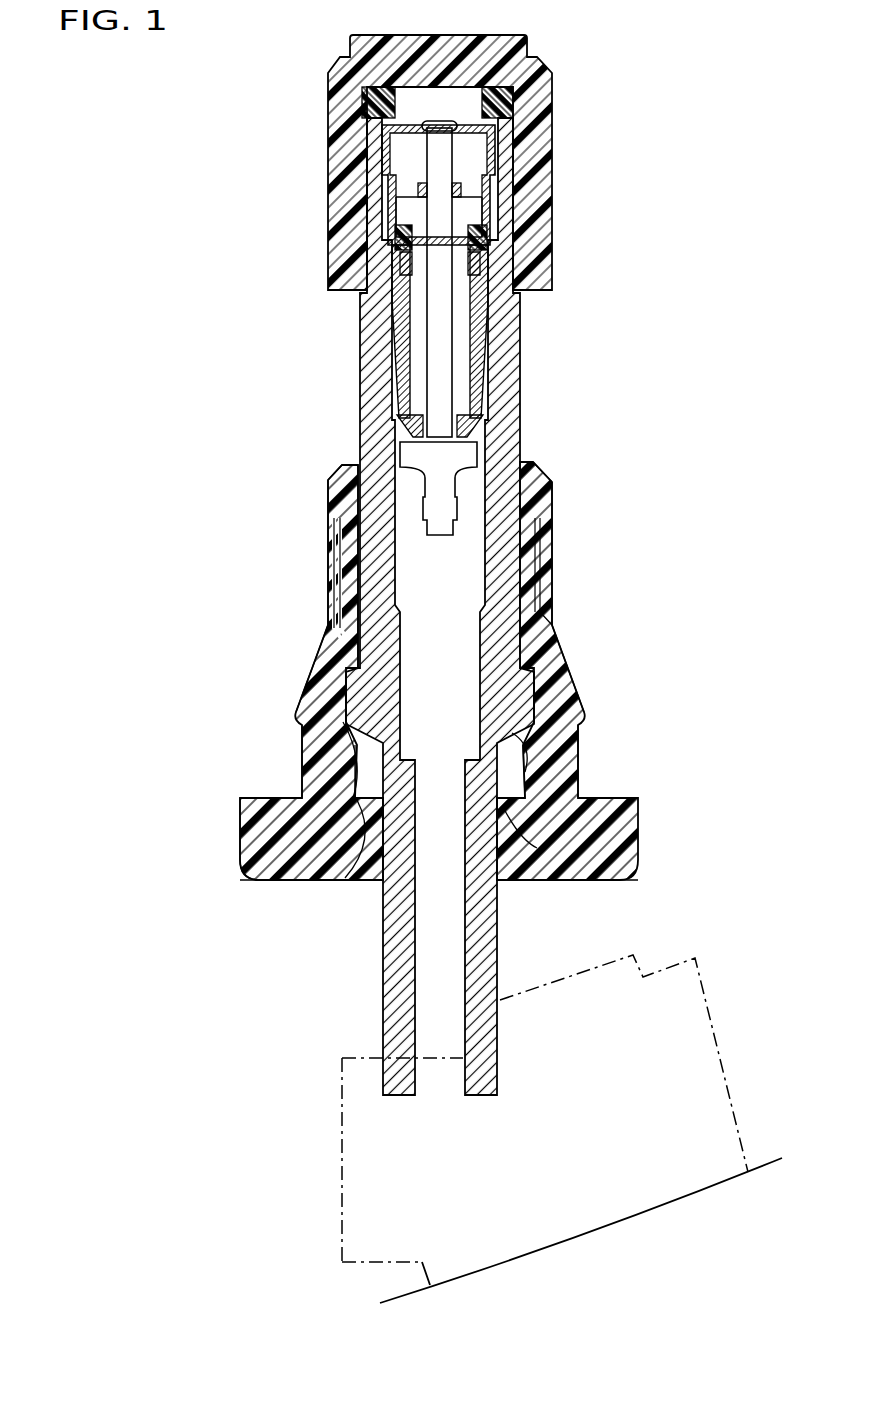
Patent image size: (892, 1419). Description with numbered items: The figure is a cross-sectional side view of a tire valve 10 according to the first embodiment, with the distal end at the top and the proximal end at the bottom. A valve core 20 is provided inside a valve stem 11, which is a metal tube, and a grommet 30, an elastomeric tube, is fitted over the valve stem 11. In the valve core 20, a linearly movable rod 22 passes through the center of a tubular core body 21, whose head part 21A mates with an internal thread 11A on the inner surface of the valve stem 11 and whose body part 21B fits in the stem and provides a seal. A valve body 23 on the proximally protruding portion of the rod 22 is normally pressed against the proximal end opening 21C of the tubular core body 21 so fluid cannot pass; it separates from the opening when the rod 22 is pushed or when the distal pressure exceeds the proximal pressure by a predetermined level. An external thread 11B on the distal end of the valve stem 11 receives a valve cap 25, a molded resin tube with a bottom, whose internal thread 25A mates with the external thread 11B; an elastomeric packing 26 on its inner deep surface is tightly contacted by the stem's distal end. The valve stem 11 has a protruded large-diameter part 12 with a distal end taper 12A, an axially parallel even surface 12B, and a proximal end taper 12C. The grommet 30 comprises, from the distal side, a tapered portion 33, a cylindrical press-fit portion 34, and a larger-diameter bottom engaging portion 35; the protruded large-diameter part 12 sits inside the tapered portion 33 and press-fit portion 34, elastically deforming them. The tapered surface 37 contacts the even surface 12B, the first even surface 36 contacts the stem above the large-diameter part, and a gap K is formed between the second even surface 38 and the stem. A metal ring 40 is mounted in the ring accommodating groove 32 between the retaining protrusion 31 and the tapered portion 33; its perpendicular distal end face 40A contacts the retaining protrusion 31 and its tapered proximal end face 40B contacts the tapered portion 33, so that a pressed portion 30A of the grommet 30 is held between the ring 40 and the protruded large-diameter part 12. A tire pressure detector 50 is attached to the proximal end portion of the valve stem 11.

The tire valve 10 is at (610, 63).
The valve stem 11 is at (510, 375).
The internal thread 11A is at (513, 147).
The external thread 11B is at (368, 193).
The protruded large-diameter part 12 is at (547, 698).
The distal end taper 12A is at (555, 642).
The even surface 12B is at (572, 677).
The proximal end taper 12C is at (577, 762).
The valve core 20 is at (483, 216).
The tubular core body 21 is at (517, 262).
The head part 21A is at (517, 232).
The body part 21B is at (517, 302).
The proximal end opening 21C is at (468, 442).
The linearly movable rod 22 is at (440, 322).
The valve body 23 is at (470, 457).
The valve cap 25 is at (345, 100).
The internal thread 25A is at (368, 163).
The packing 26 is at (355, 100).
The grommet 30 is at (552, 480).
The pressed portion 30A is at (330, 623).
The retaining protrusion 31 is at (552, 498).
The ring accommodating groove 32 is at (340, 565).
The tapered portion 33 is at (335, 650).
The press-fit portion 34 is at (302, 745).
The bottom engaging portion 35 is at (240, 823).
The first even surface 36 is at (365, 530).
The tapered surface 37 is at (325, 685).
The second even surface 38 is at (345, 878).
The ring 40 is at (550, 548).
The distal end face 40A is at (550, 513).
The proximal end face 40B is at (542, 615).
The tire pressure detector 50 is at (715, 1018).
The gap K is at (598, 882).